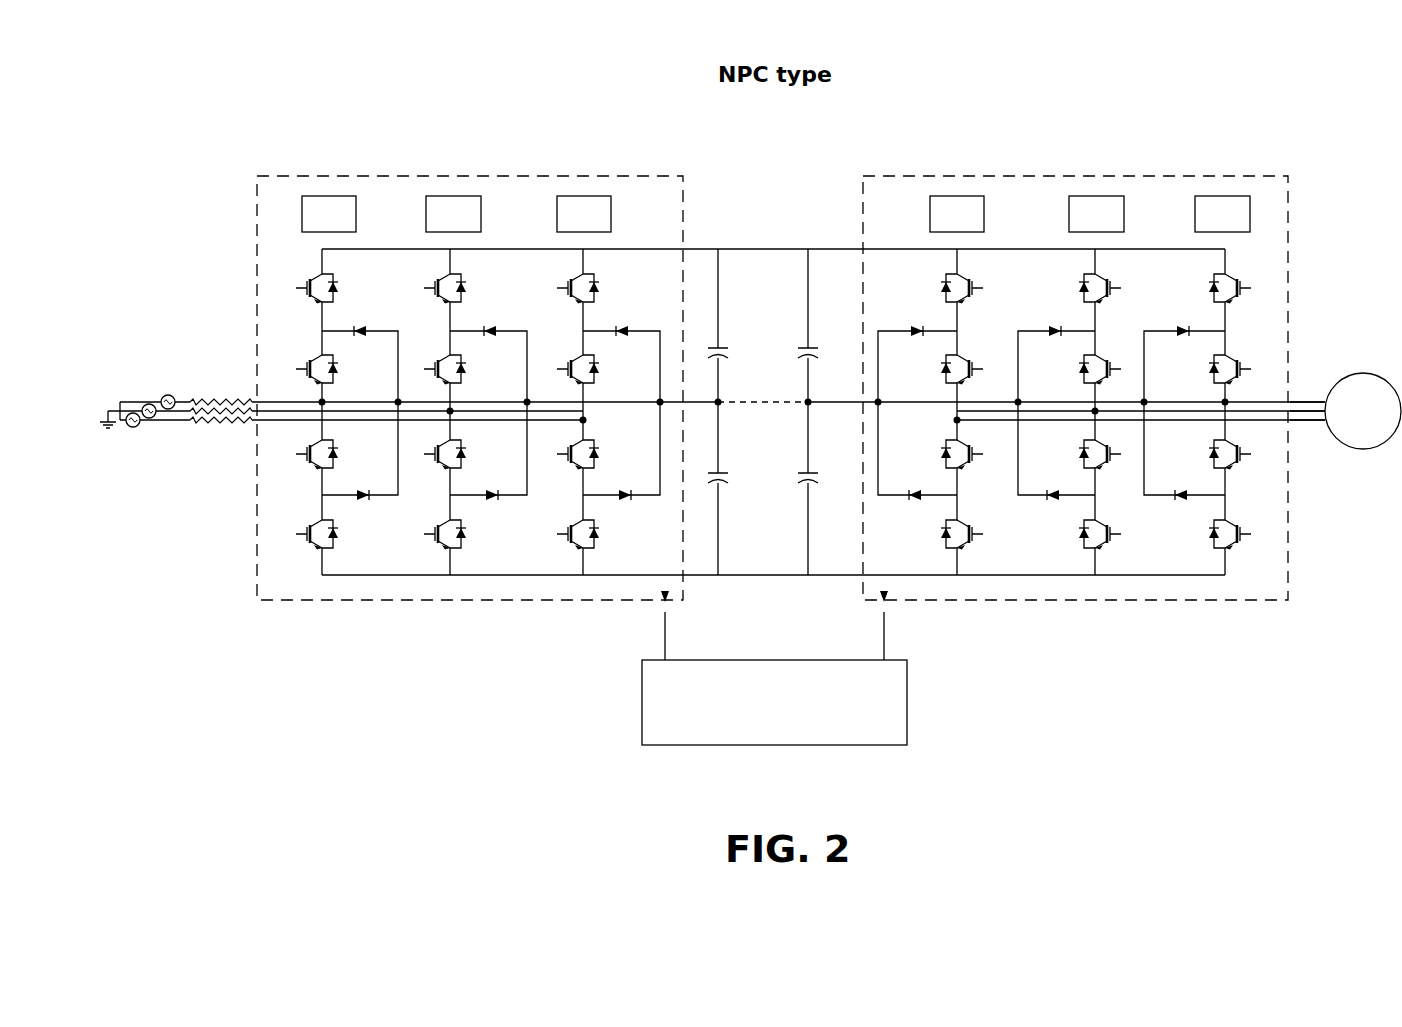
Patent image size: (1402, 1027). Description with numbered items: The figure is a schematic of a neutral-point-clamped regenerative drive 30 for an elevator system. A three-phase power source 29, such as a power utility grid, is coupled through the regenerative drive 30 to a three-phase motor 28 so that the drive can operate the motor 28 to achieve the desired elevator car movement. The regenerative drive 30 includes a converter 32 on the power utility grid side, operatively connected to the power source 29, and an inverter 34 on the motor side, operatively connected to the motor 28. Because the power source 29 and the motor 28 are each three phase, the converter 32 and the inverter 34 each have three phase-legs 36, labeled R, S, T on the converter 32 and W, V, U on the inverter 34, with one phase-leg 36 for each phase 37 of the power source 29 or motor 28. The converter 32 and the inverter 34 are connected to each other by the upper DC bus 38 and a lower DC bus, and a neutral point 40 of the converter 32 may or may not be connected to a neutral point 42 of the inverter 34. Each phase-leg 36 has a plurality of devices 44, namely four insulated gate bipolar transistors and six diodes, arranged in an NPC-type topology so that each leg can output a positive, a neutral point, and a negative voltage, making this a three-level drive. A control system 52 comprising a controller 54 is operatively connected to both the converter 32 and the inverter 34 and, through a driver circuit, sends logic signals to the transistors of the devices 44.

The motor 28 is at (1360, 382).
The power source 29 is at (124, 356).
The regenerative drive 30 is at (1187, 90).
The converter 32 is at (256, 597).
The inverter 34 is at (1270, 600).
The phase-leg 36 is at (1225, 178).
The phase 37 is at (173, 424).
The upper direct current (DC) bus 38 is at (740, 247).
The neutral point of the converter 40 is at (721, 404).
The neutral point of the inverter 42 is at (805, 404).
The devices 44 is at (597, 545).
The control system 52 is at (588, 636).
The controller 54 is at (907, 690).